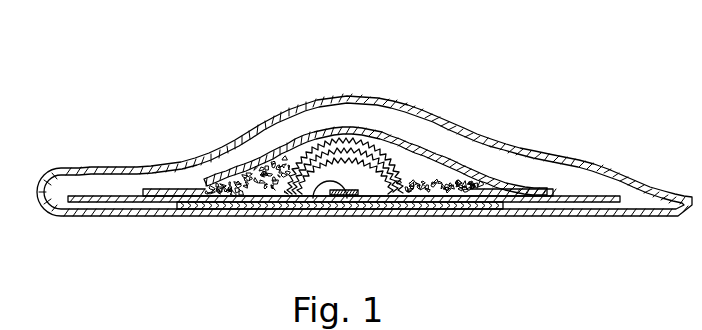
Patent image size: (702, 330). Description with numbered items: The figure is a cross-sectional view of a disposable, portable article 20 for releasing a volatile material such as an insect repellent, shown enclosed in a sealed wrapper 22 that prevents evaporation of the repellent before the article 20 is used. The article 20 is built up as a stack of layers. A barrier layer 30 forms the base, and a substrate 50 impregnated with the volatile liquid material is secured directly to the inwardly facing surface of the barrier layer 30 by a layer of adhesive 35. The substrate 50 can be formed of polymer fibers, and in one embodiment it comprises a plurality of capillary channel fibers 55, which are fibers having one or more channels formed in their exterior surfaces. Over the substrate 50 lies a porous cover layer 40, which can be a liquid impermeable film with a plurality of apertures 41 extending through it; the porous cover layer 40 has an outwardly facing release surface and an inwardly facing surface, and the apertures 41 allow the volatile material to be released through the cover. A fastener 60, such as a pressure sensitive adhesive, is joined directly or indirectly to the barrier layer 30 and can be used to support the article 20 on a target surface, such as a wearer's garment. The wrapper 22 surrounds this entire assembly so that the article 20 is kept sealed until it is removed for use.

The article 20 is at (455, 98).
The wrapper 22 is at (477, 133).
The barrier layer 30 is at (575, 202).
The layer of adhesive 35 is at (320, 200).
The porous cover layer 40 is at (357, 136).
The apertures 41 is at (306, 138).
The substrate 50 is at (278, 158).
The capillary channel fibers 55 is at (380, 198).
The fastener 60 is at (240, 200).